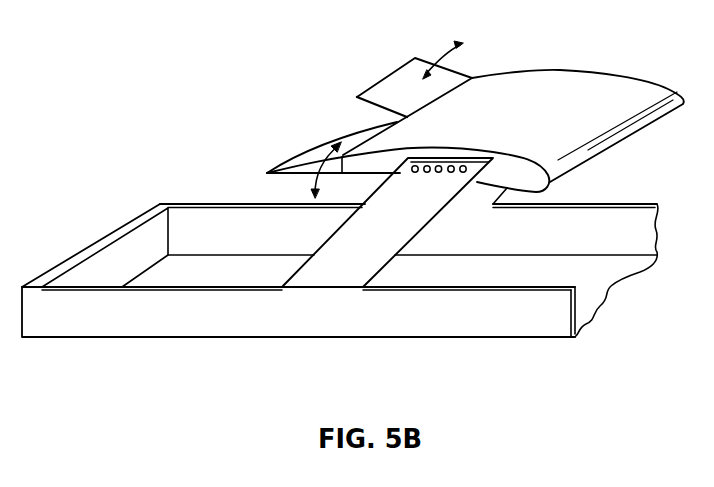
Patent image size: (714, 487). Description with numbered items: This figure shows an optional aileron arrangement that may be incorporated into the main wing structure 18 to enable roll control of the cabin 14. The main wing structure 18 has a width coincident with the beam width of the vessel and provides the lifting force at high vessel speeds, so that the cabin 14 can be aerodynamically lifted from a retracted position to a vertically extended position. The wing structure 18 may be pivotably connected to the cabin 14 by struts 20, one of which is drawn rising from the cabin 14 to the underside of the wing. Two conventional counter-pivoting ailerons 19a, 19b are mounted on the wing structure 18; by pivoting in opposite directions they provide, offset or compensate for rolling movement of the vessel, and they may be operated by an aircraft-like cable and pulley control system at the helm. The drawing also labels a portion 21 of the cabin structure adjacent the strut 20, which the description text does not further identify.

The cabin 14 is at (213, 204).
The main wing structure 18 is at (613, 82).
The aileron 19a is at (402, 66).
The aileron 19b is at (298, 155).
The strut 20 is at (440, 212).
The rear wall portion 21 is at (589, 280).